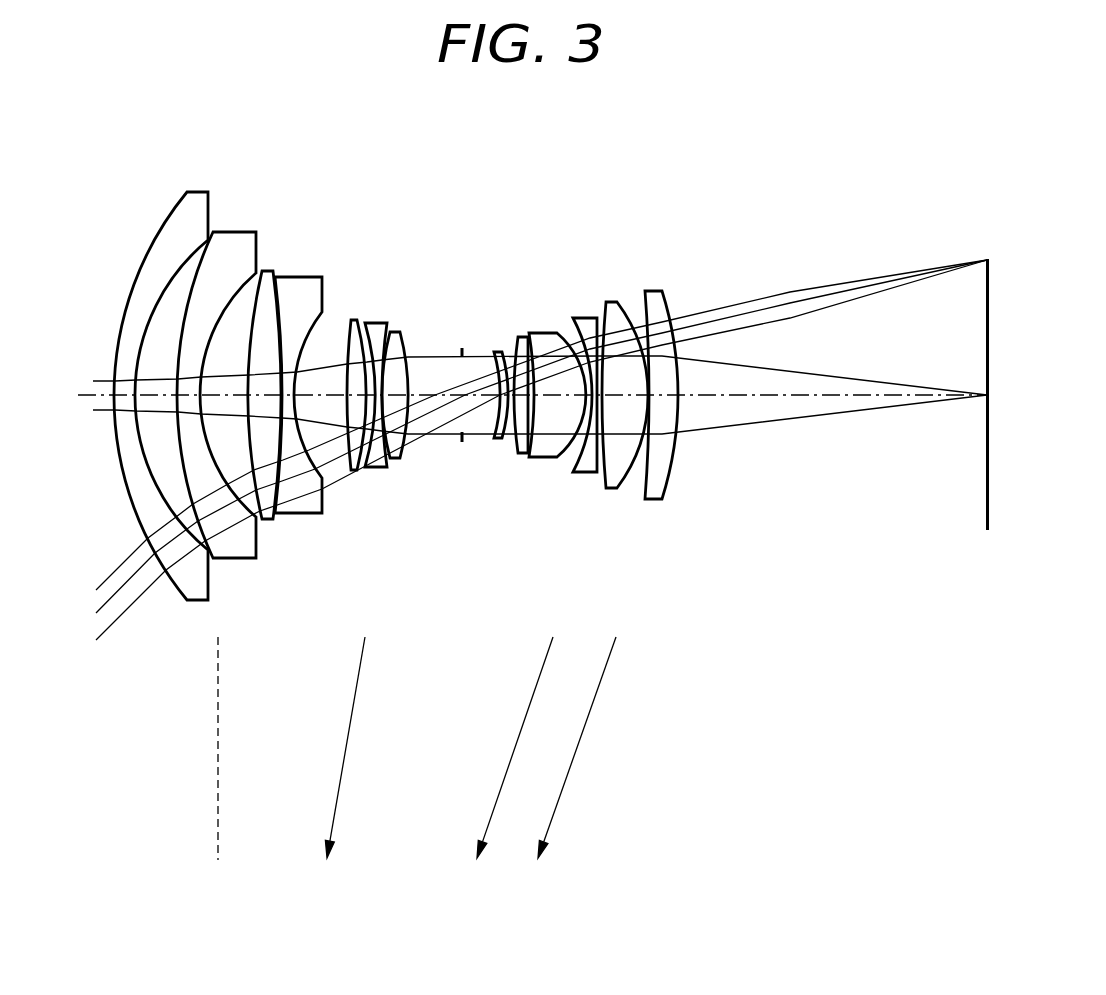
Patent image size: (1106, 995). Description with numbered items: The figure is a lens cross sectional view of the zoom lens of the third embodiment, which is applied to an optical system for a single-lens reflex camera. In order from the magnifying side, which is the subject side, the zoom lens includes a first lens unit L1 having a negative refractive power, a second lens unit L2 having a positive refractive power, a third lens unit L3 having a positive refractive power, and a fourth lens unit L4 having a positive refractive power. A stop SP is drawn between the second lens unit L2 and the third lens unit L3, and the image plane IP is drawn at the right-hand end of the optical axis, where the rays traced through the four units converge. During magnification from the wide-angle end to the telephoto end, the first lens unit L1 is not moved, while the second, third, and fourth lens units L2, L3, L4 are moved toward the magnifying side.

The first lens unit L1 is at (337, 157).
The second lens unit L2 is at (472, 257).
The third lens unit L3 is at (580, 257).
The fourth lens unit L4 is at (691, 257).
The aperture stop SP is at (464, 437).
The image plane IP is at (990, 477).